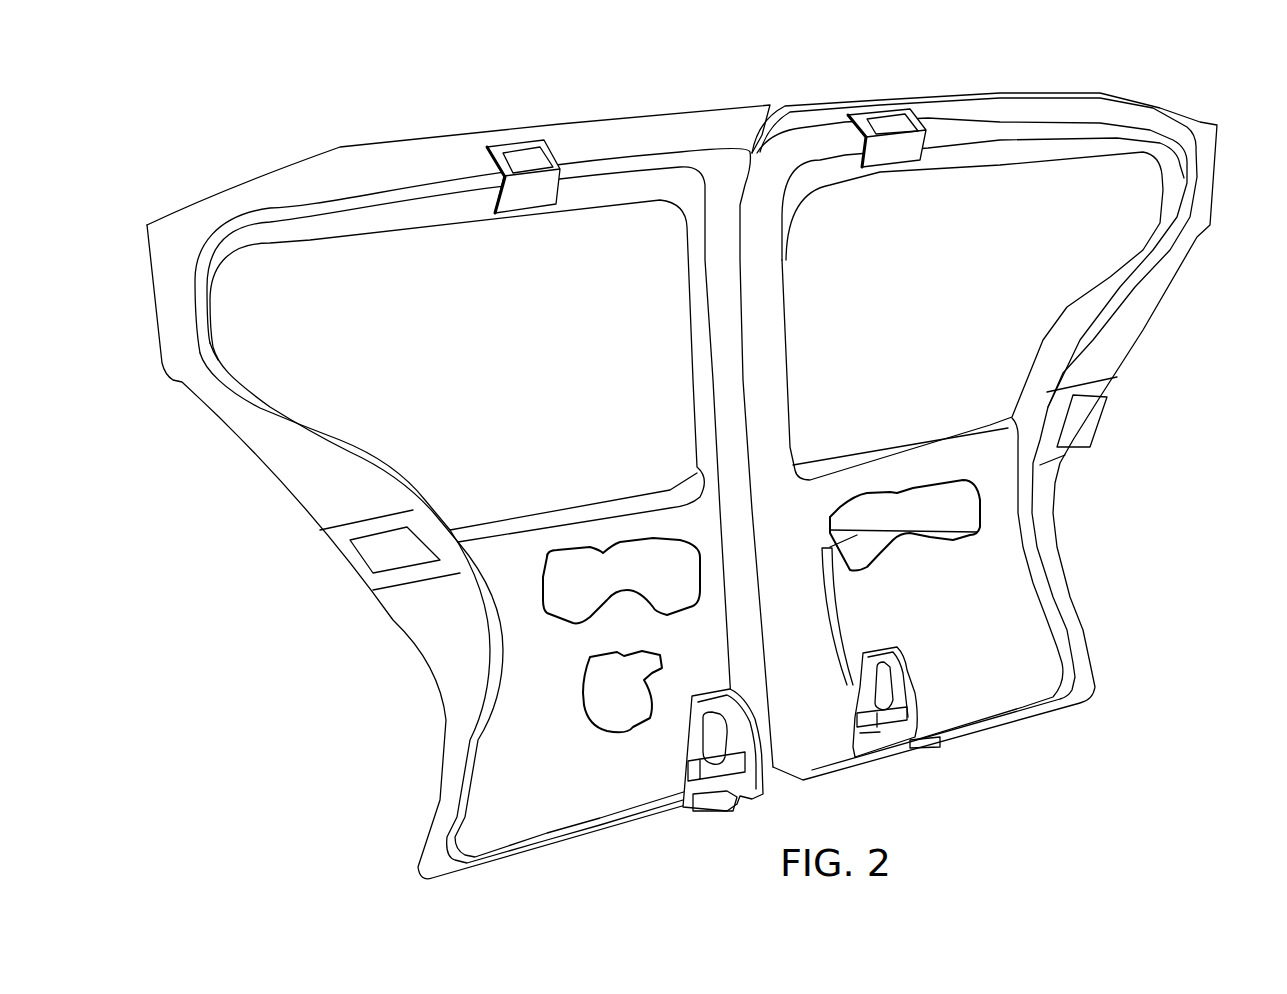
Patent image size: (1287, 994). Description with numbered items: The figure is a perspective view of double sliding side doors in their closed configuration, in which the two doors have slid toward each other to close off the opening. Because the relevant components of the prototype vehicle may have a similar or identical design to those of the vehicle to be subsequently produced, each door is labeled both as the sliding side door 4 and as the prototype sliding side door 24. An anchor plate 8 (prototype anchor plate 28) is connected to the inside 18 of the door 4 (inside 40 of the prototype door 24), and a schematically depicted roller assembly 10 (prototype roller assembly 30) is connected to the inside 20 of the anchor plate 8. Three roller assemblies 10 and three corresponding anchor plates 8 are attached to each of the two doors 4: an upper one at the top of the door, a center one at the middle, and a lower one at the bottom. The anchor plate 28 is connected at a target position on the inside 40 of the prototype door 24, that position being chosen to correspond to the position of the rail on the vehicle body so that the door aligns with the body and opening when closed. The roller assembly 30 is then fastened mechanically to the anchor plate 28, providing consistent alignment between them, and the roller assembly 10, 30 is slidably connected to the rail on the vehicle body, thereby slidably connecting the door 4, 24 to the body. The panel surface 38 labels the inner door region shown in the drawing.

The sliding side door 4 is at (682, 463).
The prototype sliding side door 24 is at (400, 152).
The anchor plate 8 is at (723, 433).
The prototype anchor plate 28 is at (497, 150).
The roller assembly 10 is at (723, 454).
The prototype roller assembly 30 is at (520, 158).
The inside of the anchor plate 20 is at (728, 413).
The inside of the prototype door 40 is at (728, 413).
The inside of the door 18 is at (816, 765).
The panel surface 38 is at (816, 765).